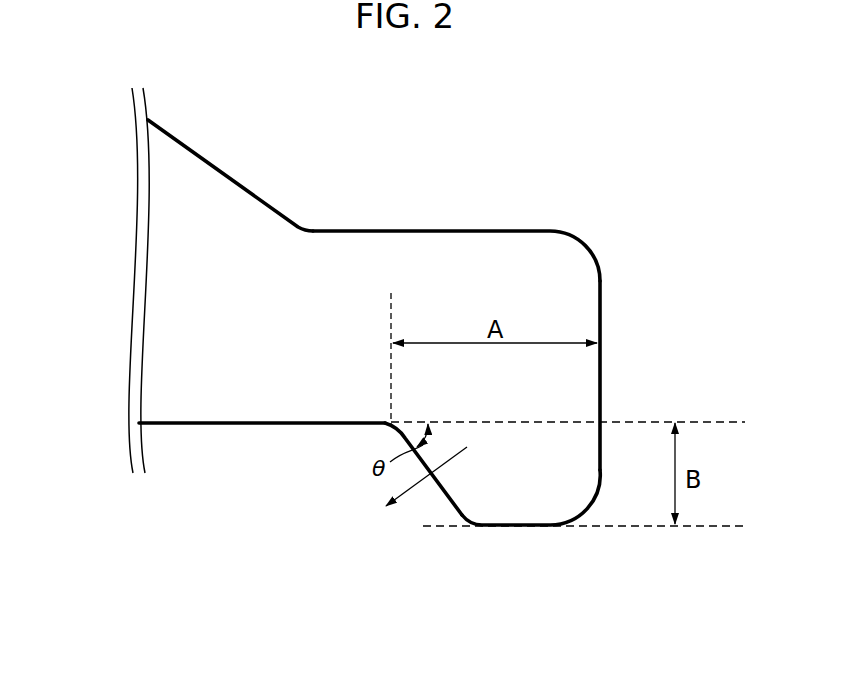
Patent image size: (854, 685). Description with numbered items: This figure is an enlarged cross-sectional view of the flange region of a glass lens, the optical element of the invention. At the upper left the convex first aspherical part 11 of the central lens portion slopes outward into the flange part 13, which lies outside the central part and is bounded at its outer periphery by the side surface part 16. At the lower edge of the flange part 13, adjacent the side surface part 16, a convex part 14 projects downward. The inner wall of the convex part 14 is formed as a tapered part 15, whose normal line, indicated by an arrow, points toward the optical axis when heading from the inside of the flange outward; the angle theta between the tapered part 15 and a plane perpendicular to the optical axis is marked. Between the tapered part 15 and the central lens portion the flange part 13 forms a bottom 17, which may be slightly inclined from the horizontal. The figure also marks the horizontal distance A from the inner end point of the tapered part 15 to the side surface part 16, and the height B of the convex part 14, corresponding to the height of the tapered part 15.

The first aspherical part 11 is at (195, 142).
The flange part 13 is at (503, 260).
The convex part 14 is at (510, 497).
The tapered part 15 is at (433, 490).
The side surface part 16 is at (605, 298).
The bottom 17 is at (246, 425).